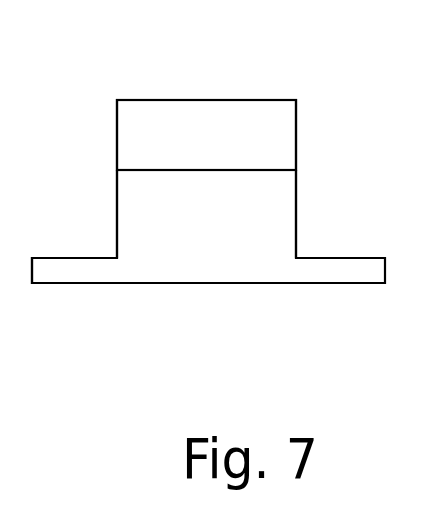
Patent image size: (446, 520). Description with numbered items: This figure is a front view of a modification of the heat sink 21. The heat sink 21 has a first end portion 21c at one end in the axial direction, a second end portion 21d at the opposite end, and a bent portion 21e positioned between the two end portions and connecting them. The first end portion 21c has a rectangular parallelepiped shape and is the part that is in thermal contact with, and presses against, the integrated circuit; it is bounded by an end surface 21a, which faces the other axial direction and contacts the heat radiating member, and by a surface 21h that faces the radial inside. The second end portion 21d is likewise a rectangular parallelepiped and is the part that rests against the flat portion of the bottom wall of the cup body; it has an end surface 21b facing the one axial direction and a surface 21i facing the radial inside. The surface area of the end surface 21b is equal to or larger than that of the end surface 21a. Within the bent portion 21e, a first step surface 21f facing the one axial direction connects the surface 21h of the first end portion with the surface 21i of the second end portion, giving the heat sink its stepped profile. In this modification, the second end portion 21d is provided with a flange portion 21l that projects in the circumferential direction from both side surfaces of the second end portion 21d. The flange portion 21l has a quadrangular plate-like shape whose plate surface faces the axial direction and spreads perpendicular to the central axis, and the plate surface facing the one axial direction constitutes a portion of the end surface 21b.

The heat sink 21 is at (323, 153).
The end surface 21a is at (224, 100).
The end surface 21b is at (238, 284).
The first end portion 21c is at (154, 98).
The second end portion 21d is at (158, 286).
The bent portion 21e is at (151, 174).
The first step surface 21f is at (256, 172).
The surface facing the radial inside 21h is at (140, 134).
The surface facing the radial inside 21i is at (140, 221).
The flange portion 21l is at (54, 273).